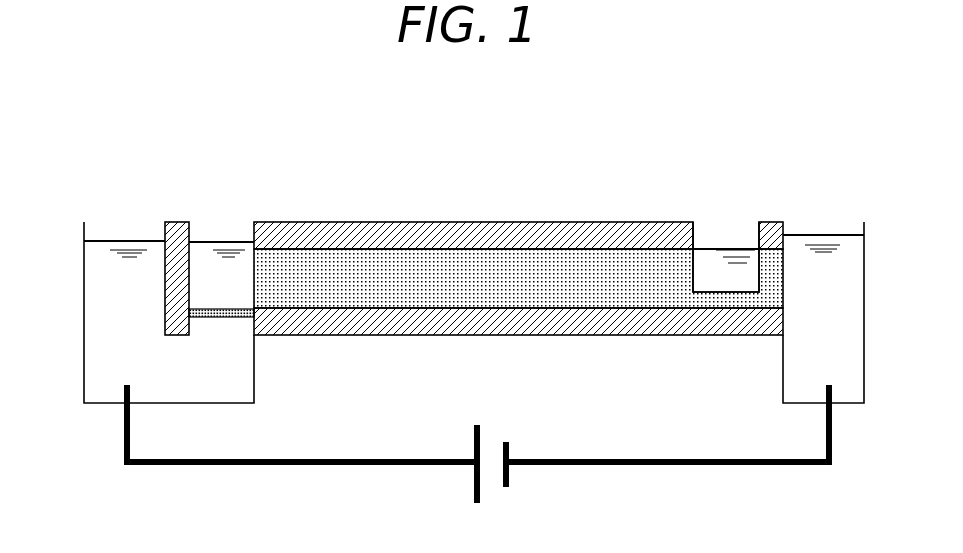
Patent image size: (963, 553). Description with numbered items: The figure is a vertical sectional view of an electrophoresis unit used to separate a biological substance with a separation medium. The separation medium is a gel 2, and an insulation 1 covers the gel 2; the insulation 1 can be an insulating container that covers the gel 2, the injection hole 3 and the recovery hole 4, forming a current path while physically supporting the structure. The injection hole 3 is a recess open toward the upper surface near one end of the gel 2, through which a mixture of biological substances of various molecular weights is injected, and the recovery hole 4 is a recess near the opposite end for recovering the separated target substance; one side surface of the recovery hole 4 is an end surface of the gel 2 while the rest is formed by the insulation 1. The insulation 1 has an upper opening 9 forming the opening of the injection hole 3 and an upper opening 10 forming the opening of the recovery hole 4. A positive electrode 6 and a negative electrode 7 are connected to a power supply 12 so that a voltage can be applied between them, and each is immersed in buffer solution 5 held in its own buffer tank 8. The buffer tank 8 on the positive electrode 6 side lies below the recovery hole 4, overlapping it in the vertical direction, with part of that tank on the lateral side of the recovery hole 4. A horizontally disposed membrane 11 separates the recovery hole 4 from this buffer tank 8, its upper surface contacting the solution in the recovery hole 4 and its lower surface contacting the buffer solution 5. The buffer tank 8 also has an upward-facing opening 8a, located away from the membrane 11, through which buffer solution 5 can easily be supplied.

The insulation 1 is at (385, 233).
The gel 2 is at (543, 262).
The injection hole 3 is at (710, 262).
The recovery hole 4 is at (203, 250).
The buffer solution 5 is at (105, 323).
The positive electrode 6 is at (118, 392).
The negative electrode 7 is at (833, 392).
The buffer tank 8 is at (102, 282).
The opening 8a is at (125, 228).
The upper opening 9 is at (733, 237).
The upper opening 10 is at (228, 227).
The membrane 11 is at (220, 317).
The power supply 12 is at (493, 433).